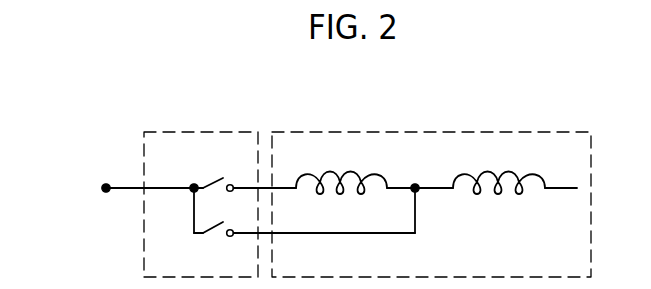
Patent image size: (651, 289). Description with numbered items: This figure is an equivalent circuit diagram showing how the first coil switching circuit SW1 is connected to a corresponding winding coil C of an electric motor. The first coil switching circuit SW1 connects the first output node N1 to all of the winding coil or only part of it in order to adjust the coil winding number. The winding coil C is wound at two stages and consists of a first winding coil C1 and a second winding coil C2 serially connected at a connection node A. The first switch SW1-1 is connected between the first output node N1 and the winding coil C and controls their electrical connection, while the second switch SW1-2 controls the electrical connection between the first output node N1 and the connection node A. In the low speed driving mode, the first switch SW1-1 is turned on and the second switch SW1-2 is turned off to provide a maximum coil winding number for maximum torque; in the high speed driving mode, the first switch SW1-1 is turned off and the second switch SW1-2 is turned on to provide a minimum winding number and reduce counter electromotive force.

The first output node N1 is at (106, 188).
The first coil switching circuit SW1 is at (174, 131).
The 1-1st switch SW1-1 is at (241, 171).
The 1-2nd switch SW1-2 is at (301, 246).
The winding coil C is at (483, 132).
The first winding coil C1 is at (341, 169).
The second winding coil C2 is at (515, 169).
The connection node A is at (420, 173).